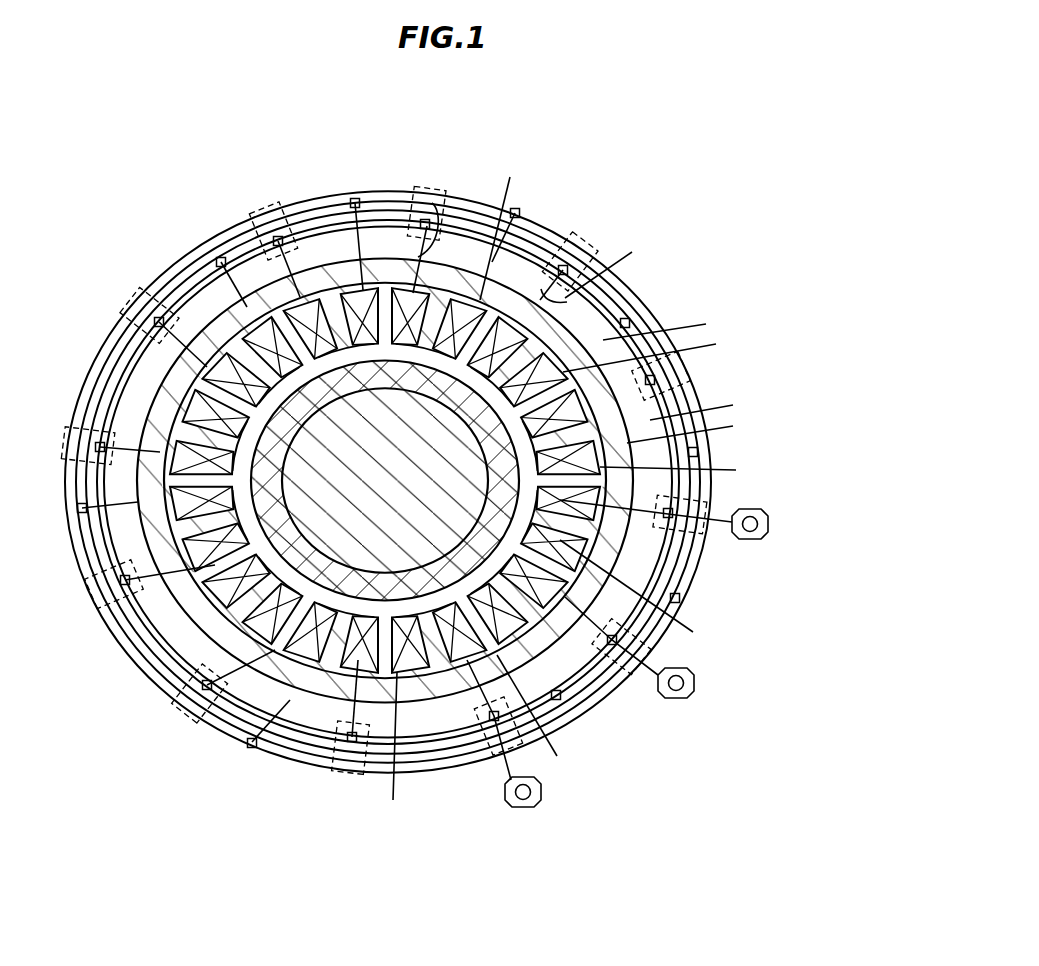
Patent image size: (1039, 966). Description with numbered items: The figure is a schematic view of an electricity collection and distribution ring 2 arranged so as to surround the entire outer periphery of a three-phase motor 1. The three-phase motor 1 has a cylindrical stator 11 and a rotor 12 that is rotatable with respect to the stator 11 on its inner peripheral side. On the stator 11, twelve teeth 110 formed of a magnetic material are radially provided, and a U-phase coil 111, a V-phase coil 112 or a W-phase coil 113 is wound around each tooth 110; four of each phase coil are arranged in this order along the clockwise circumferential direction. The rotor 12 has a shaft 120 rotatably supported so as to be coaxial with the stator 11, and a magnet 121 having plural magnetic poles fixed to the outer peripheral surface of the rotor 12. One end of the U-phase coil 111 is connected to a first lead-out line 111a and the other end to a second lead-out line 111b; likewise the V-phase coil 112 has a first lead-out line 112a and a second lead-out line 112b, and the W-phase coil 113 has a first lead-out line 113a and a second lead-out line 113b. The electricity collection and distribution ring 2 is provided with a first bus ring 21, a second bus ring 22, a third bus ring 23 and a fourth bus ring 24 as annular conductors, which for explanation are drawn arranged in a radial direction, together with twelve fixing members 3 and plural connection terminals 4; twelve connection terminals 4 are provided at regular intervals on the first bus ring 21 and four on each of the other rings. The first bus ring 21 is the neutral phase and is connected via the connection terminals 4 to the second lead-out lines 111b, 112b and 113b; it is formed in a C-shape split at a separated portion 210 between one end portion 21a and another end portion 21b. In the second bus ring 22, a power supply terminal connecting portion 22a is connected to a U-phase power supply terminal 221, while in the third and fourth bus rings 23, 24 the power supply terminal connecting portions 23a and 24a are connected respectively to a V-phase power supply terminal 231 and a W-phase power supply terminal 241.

The three-phase motor 1 is at (779, 294).
The electricity collection and distribution ring 2 is at (597, 137).
The fixing member 3 is at (424, 217).
The connection terminal 4 is at (410, 198).
The stator 11 is at (572, 318).
The rotor 12 is at (497, 387).
The first bus ring 21 is at (190, 315).
The second bus ring 22 is at (200, 298).
The third bus ring 23 is at (210, 280).
The fourth bus ring 24 is at (222, 262).
The one end portion 21a is at (356, 198).
The another end portion 21b is at (296, 226).
The power supply terminal connecting portion 22a is at (724, 526).
The power supply terminal connecting portion 23a is at (640, 668).
The power supply terminal connecting portion 24a is at (505, 768).
The tooth 110 is at (520, 513).
The U-phase coil 111 is at (625, 549).
The first lead-out line 111a is at (679, 324).
The second lead-out line 111b is at (608, 265).
The V-phase coil 112 is at (570, 633).
The first lead-out line 112a is at (705, 427).
The second lead-out line 112b is at (716, 404).
The W-phase coil 113 is at (522, 216).
The first lead-out line 113a is at (512, 227).
The second lead-out line 113b is at (436, 222).
The shaft 120 is at (353, 466).
The magnet 121 is at (240, 611).
The separated portion 210 is at (319, 217).
The U-phase power supply terminal 221 is at (764, 511).
The V-phase power supply terminal 231 is at (690, 697).
The W-phase power supply terminal 241 is at (533, 806).